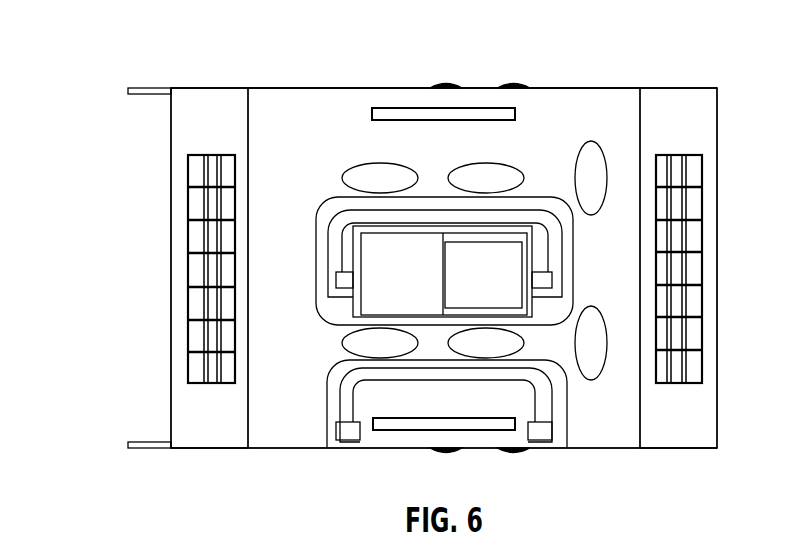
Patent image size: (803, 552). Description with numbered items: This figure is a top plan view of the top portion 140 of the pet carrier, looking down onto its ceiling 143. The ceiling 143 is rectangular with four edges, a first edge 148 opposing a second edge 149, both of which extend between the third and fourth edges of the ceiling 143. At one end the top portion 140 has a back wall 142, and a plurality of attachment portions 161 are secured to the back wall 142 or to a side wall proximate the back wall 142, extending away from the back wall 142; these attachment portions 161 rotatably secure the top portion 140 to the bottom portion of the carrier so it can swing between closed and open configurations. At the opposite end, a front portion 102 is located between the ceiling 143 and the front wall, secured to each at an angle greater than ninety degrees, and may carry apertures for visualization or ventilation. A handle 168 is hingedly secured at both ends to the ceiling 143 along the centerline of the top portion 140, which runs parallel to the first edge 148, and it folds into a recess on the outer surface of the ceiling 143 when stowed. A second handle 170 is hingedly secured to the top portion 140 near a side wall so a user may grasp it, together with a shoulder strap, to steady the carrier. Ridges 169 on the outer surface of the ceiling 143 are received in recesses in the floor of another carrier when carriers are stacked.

The front portion 102 is at (678, 84).
The top portion 140 is at (105, 187).
The back wall 142 is at (208, 84).
The ceiling 143 is at (537, 84).
The first edge 148 is at (585, 455).
The second edge 149 is at (342, 88).
The attachment portion 161 is at (142, 99).
The handle 168 is at (333, 244).
The ridge 169 is at (368, 112).
The second handle 170 is at (325, 431).